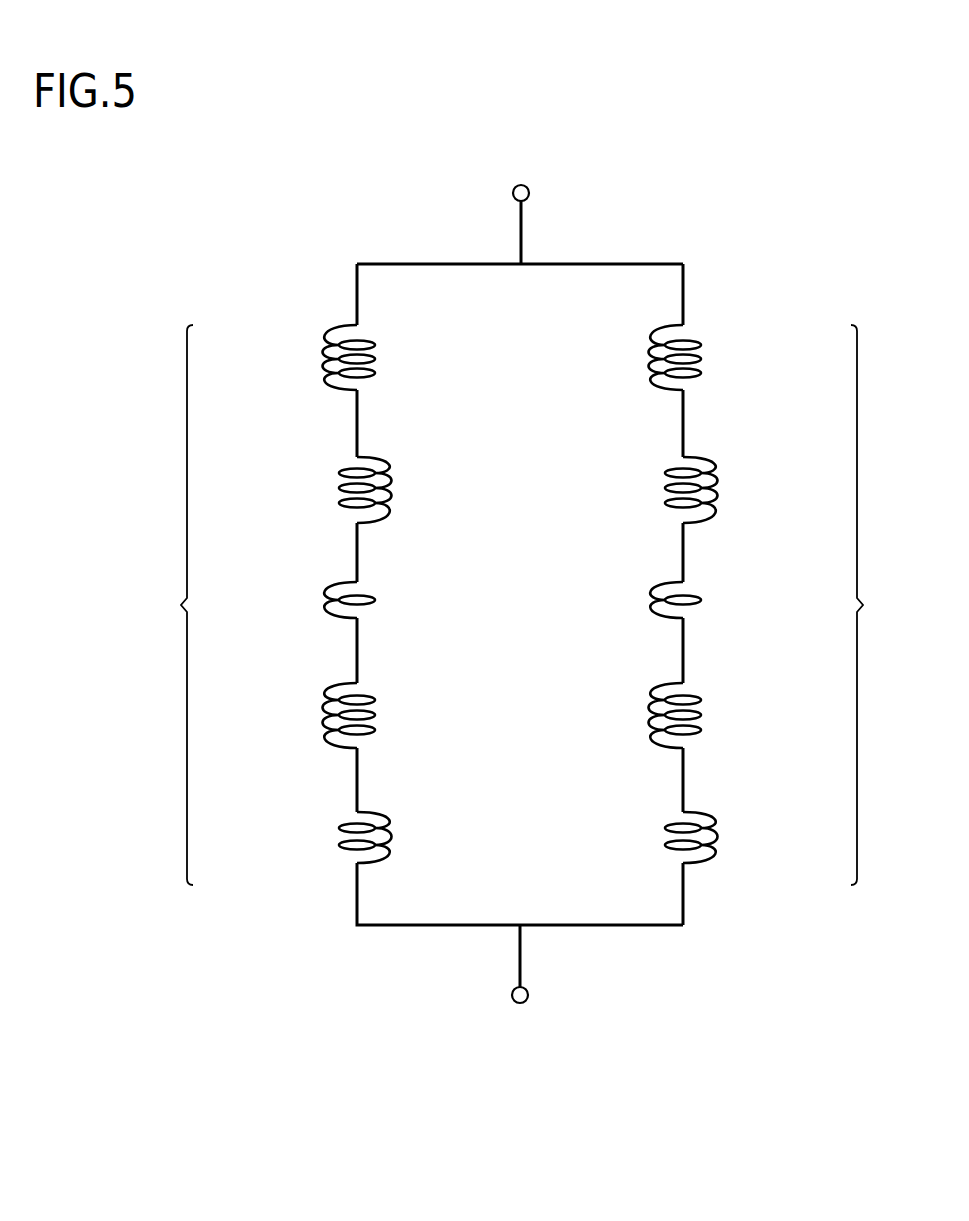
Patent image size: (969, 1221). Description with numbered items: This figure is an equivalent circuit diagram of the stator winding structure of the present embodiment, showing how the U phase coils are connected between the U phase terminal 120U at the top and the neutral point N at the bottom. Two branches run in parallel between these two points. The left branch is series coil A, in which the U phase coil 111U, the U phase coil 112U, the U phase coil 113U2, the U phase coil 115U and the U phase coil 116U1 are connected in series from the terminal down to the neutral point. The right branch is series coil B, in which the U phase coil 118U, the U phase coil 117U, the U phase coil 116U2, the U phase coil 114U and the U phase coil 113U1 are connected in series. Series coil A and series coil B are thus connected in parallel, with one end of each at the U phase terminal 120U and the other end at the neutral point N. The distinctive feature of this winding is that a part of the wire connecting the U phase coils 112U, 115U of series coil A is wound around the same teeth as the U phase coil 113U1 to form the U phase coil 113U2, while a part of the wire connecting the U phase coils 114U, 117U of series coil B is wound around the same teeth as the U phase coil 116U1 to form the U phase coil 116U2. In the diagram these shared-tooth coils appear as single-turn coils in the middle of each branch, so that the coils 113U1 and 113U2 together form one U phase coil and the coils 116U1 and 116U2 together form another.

The U phase terminal 120U is at (521, 185).
The neutral point N is at (520, 1003).
The series coil A is at (175, 605).
The series coil B is at (870, 605).
The U phase coil 111U is at (325, 354).
The U phase coil 112U is at (357, 457).
The U phase coil 113U1 is at (700, 855).
The U phase coil 113U2 is at (345, 582).
The U phase coil 114U is at (700, 700).
The U phase coil 115U is at (325, 711).
The U phase coil 116U1 is at (352, 852).
The U phase coil 116U2 is at (692, 607).
The U phase coil 117U is at (703, 457).
The U phase coil 118U is at (703, 348).